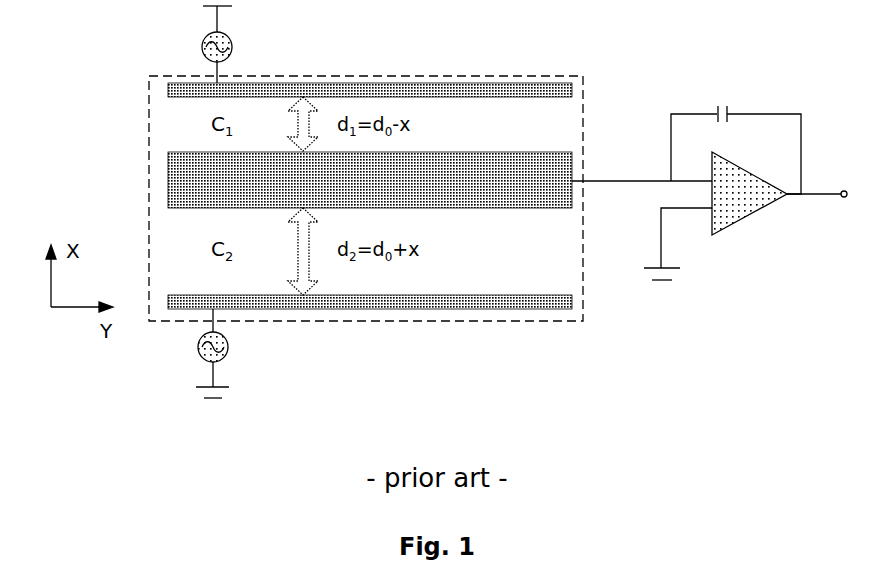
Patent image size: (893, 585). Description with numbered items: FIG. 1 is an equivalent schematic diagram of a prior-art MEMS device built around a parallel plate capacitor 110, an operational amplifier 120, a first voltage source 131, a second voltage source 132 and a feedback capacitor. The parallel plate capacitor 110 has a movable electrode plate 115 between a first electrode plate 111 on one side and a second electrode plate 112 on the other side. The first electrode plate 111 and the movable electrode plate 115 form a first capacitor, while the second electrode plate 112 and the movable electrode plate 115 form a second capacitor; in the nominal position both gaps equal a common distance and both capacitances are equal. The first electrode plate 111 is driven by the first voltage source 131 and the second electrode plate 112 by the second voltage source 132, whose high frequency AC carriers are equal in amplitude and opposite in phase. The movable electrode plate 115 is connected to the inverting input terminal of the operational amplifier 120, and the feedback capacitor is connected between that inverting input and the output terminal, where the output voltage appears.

The parallel plate capacitor 110 is at (150, 82).
The first electrode plate 111 is at (502, 88).
The second electrode plate 112 is at (492, 305).
The movable electrode plate 115 is at (545, 156).
The operational amplifier 120 is at (740, 215).
The first voltage source 131 is at (226, 36).
The second voltage source 132 is at (225, 357).